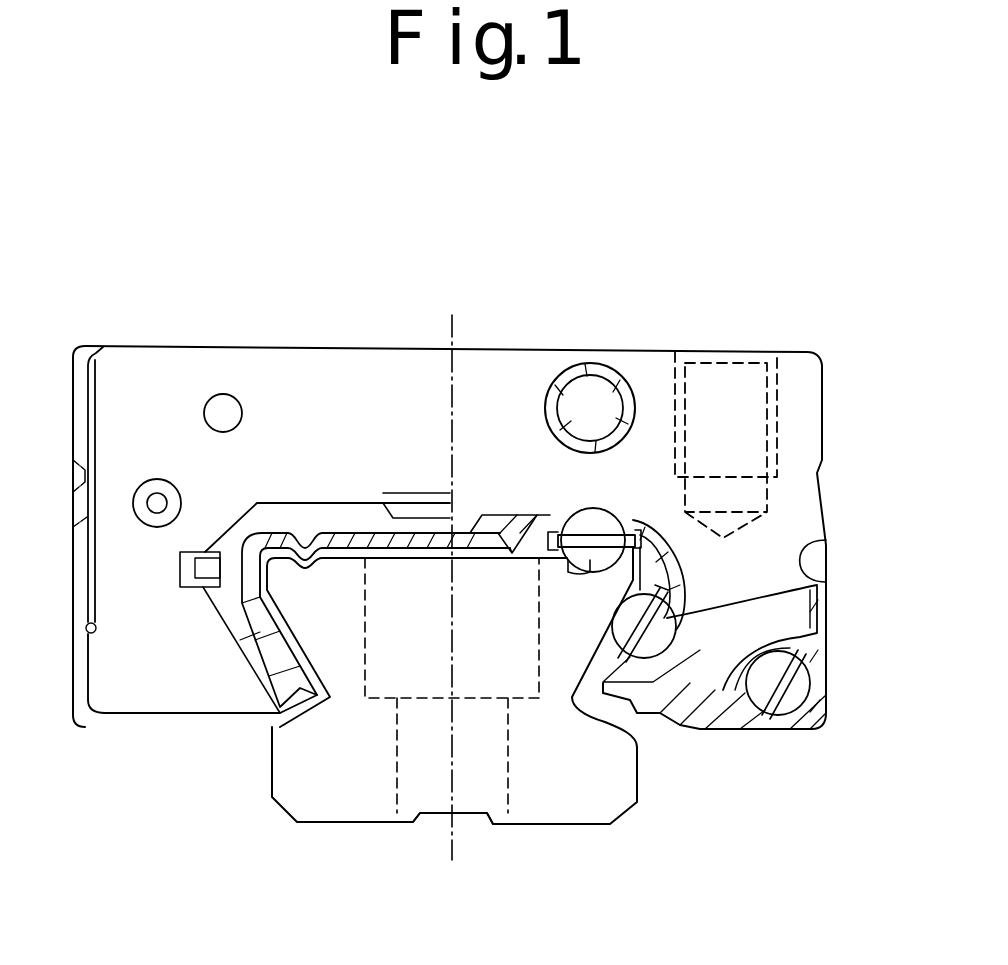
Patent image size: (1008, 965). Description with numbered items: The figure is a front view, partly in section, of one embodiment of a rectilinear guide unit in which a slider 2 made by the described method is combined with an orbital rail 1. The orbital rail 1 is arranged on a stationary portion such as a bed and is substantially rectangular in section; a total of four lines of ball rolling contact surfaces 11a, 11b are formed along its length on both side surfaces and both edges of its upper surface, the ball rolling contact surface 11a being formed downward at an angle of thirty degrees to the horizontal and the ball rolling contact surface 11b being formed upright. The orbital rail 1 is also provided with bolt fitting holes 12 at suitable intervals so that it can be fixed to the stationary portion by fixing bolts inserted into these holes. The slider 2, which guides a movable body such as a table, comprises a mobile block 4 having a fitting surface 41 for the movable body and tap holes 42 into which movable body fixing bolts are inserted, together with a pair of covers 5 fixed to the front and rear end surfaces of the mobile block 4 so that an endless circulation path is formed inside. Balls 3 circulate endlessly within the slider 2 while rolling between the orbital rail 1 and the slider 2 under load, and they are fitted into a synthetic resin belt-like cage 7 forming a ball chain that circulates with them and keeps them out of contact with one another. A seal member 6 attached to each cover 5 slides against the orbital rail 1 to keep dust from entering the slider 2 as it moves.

The orbital rail 1 is at (292, 828).
The slider 2 is at (208, 338).
The balls 3 is at (577, 527).
The mobile block 4 is at (800, 373).
The covers 5 is at (128, 372).
The seal member 6 is at (320, 518).
The belt-like cage 7 is at (610, 527).
The ball rolling contact surface 11a is at (717, 729).
The ball rolling contact surface 11b is at (587, 573).
The bolt fitting holes 12 is at (507, 763).
The fitting surface 41 is at (772, 355).
The tap holes 42 is at (685, 425).